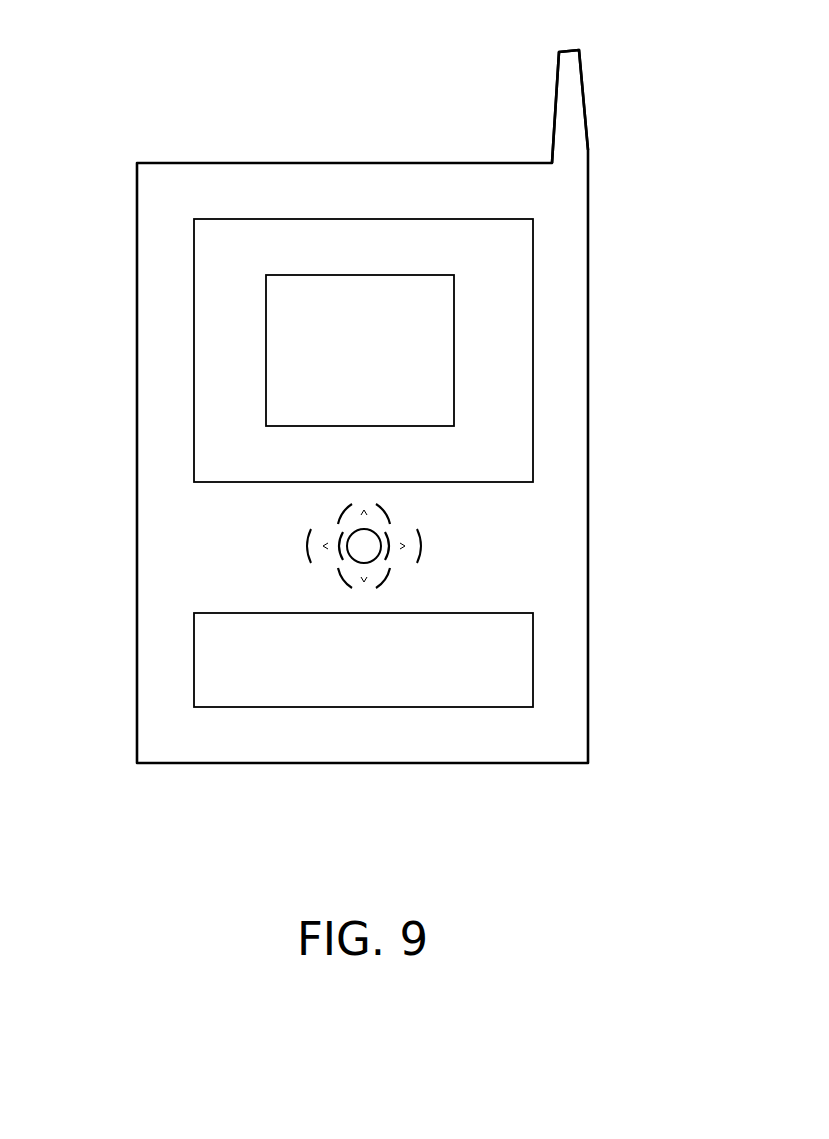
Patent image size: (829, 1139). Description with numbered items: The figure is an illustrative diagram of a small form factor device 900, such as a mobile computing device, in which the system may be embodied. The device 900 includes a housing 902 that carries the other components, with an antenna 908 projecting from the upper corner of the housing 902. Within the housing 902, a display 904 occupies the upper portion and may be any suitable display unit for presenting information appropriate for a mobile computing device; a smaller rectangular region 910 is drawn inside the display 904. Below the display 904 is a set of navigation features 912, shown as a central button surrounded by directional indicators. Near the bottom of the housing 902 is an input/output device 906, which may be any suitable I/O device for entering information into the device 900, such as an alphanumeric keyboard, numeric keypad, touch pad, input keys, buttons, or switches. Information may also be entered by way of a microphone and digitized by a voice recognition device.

The small form factor device 900 is at (158, 69).
The housing 902 is at (590, 463).
The display 904 is at (534, 238).
The input/output (I/O) device 906 is at (534, 650).
The antenna 908 is at (555, 100).
The display window 910 is at (455, 369).
The navigation features 912 is at (436, 541).